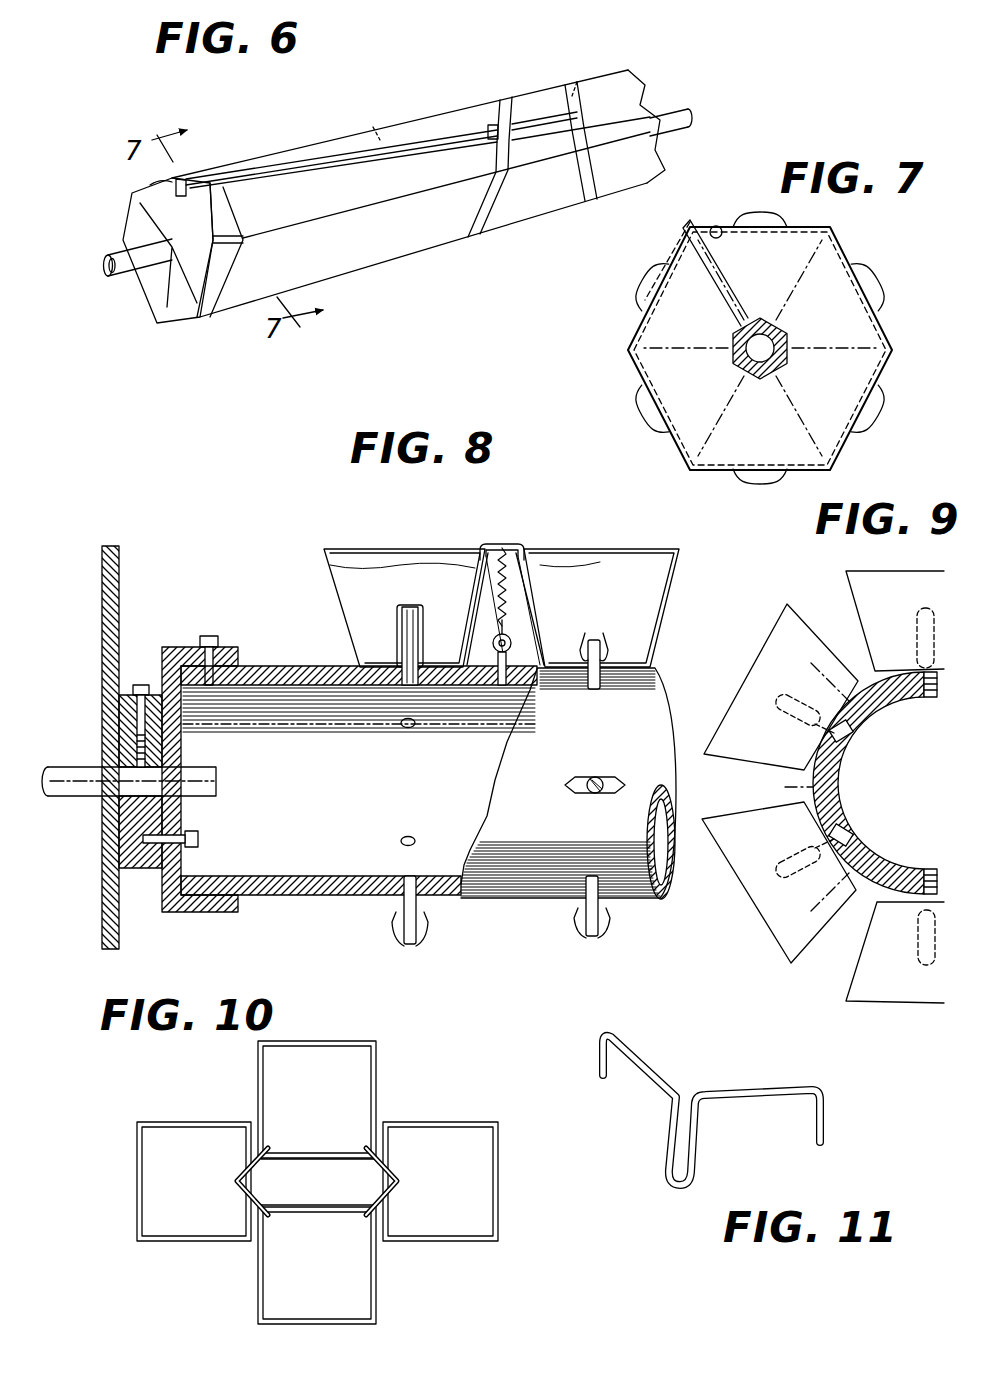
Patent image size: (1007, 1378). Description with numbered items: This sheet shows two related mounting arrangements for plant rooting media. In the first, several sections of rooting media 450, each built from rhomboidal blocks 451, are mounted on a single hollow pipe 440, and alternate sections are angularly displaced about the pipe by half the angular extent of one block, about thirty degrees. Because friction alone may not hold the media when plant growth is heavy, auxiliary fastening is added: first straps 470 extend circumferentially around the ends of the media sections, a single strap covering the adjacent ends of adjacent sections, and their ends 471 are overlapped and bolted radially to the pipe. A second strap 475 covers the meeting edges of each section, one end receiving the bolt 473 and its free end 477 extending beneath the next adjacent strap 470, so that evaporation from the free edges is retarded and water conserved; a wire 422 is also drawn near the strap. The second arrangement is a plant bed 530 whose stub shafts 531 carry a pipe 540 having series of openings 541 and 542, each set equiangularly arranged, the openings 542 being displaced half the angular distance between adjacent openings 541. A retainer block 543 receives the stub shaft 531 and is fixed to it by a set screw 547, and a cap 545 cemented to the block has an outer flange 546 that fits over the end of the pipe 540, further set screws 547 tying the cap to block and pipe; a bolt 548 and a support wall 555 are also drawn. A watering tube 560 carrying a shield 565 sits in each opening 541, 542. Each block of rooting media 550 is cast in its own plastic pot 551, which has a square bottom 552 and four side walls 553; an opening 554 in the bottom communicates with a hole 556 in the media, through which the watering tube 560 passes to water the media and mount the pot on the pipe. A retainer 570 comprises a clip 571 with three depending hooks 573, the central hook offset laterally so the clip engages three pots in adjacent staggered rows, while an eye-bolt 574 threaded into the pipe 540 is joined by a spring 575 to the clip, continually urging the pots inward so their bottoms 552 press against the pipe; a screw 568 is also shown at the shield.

In FIG. 7, the spring wire 422 is at (680, 262).
In FIG. 6, the pipe 440 is at (118, 288).
In FIG. 7, the pipe 440 is at (784, 337).
In FIG. 6, the rooting media 450 is at (632, 92).
In FIG. 7, the rooting media 450 is at (695, 380).
In FIG. 6, the rhomboidal blocks 451 is at (137, 226).
In FIG. 7, the rhomboidal blocks 451 is at (790, 447).
In FIG. 6, the first straps 470 is at (232, 300).
In FIG. 7, the first straps 470 is at (878, 330).
In FIG. 6, the ends 471 is at (150, 185).
In FIG. 7, the ends 471 is at (727, 220).
In FIG. 6, the bolt 473 is at (185, 180).
In FIG. 6, the second strap 475 is at (298, 150).
In FIG. 7, the second strap 475 is at (708, 220).
In FIG. 6, the free end 477 is at (375, 126).
In FIG. 8, the plant bed 530 is at (205, 540).
In FIG. 8, the stub shafts 531 is at (75, 770).
In FIG. 8, the pipe 540 is at (293, 895).
In FIG. 9, the pipe 540 is at (845, 765).
In FIG. 8, the openings 541 is at (400, 845).
In FIG. 9, the openings 541 is at (848, 737).
In FIG. 9, the openings 542 is at (857, 660).
In FIG. 8, the retainer block 543 is at (130, 835).
In FIG. 8, the cap 545 is at (158, 895).
In FIG. 8, the outer flange 546 is at (178, 646).
In FIG. 8, the set screws 547 is at (142, 684).
In FIG. 8, the bolt 548 is at (214, 636).
In FIG. 8, the rooting media 550 is at (382, 560).
In FIG. 10, the rooting media 550 is at (321, 1102).
In FIG. 8, the pot 551 is at (458, 552).
In FIG. 9, the pot 551 is at (780, 625).
In FIG. 10, the pot 551 is at (258, 1087).
In FIG. 8, the bottom 552 is at (398, 685).
In FIG. 8, the side walls 553 is at (398, 612).
In FIG. 8, the opening 554 is at (430, 690).
In FIG. 8, the support wall 555 is at (103, 605).
In FIG. 8, the hole 556 is at (455, 640).
In FIG. 8, the watering tube 560 is at (398, 627).
In FIG. 9, the watering tube 560 is at (832, 786).
In FIG. 8, the shield 565 is at (397, 640).
In FIG. 8, the screw 568 is at (415, 620).
In FIG. 8, the retainer 570 is at (512, 542).
In FIG. 8, the clip 571 is at (522, 548).
In FIG. 10, the clip 571 is at (388, 1160).
In FIG. 11, the clip 571 is at (658, 1108).
In FIG. 8, the hooks 573 is at (483, 545).
In FIG. 11, the hooks 573 is at (598, 1062).
In FIG. 8, the eye-bolt 574 is at (511, 641).
In FIG. 8, the spring 575 is at (506, 605).